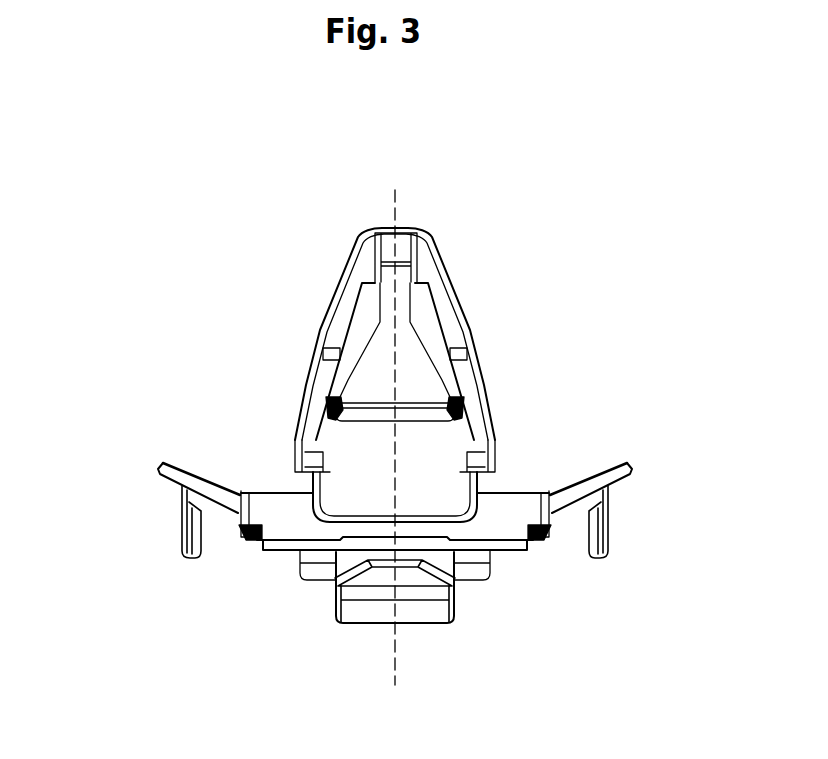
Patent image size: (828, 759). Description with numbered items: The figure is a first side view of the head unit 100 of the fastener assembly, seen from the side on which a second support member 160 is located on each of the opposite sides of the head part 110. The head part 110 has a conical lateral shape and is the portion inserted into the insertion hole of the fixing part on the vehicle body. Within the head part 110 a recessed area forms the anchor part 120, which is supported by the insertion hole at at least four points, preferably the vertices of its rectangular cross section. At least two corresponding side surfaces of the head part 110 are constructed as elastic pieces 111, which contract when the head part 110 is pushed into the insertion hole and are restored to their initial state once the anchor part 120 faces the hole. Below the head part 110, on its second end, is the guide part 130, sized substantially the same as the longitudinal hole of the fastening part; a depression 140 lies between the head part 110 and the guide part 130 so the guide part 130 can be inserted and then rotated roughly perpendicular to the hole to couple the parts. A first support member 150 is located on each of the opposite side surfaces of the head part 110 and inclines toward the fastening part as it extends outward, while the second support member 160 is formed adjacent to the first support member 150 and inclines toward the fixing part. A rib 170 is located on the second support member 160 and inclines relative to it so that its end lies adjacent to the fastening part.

The head unit 100 is at (508, 173).
The head part 110 is at (308, 347).
The elastic pieces 111 is at (345, 292).
The anchor part 120 is at (290, 467).
The guide part 130 is at (363, 612).
The depression 140 is at (463, 577).
The first support member 150 is at (493, 517).
The second support member 160 is at (165, 476).
The rib 170 is at (207, 548).